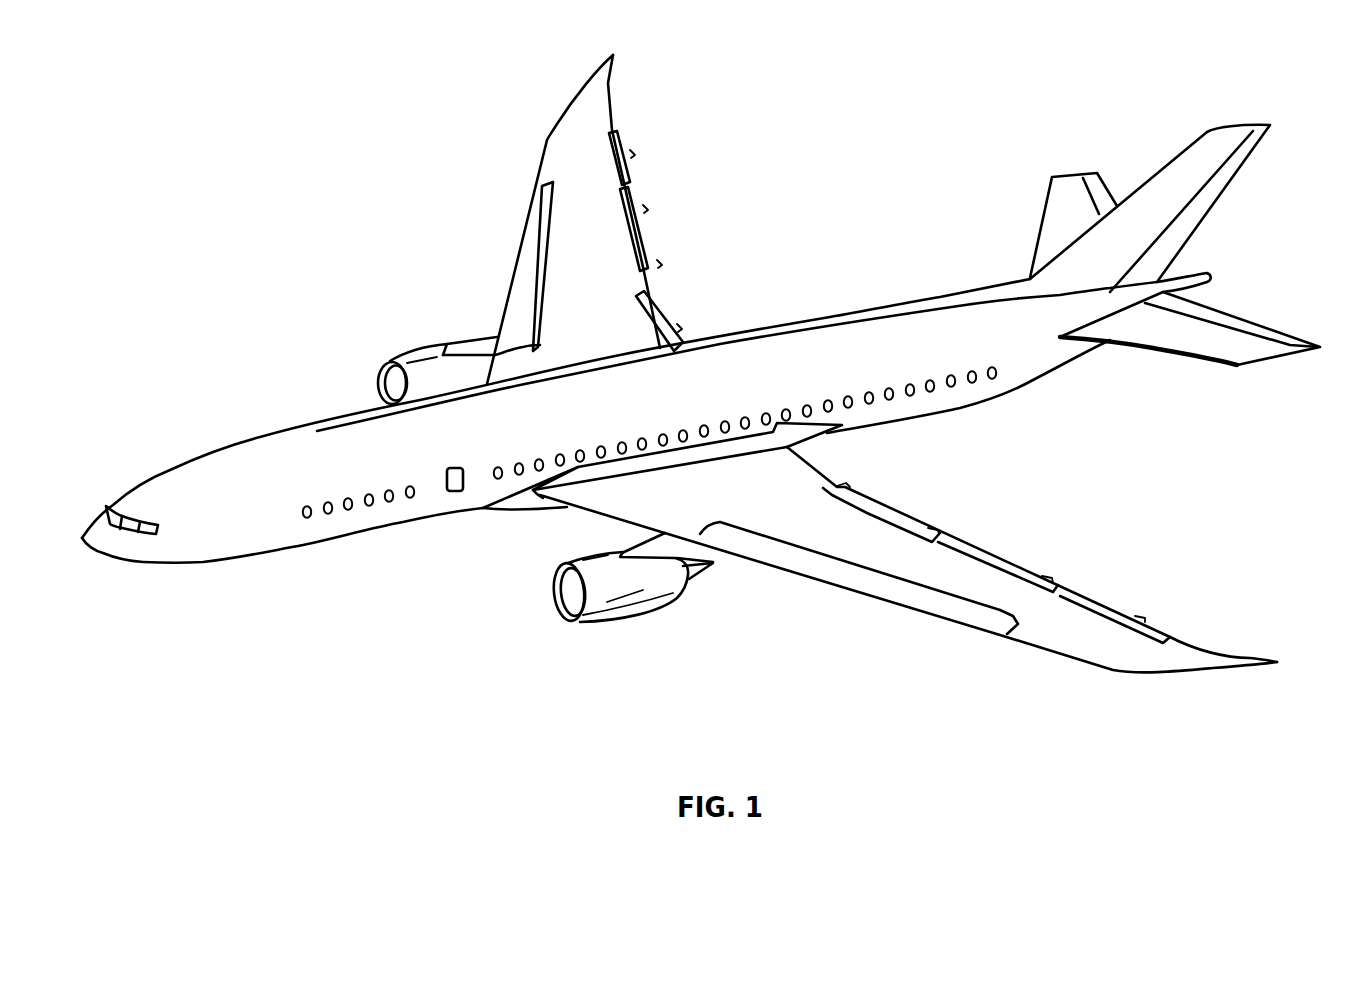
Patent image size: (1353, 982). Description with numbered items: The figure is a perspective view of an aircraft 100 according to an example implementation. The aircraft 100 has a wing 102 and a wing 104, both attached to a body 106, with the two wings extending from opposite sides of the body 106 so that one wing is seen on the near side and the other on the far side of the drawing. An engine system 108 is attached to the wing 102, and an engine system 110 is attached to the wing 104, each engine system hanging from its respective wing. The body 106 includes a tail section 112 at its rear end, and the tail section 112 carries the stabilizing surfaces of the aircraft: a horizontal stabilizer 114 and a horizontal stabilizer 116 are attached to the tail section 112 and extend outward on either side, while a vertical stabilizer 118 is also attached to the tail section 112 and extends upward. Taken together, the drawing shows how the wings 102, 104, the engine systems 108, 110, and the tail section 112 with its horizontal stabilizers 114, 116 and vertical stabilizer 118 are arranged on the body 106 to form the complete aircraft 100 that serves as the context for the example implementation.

The aircraft 100 is at (358, 256).
The wing 102 is at (612, 87).
The wing 104 is at (1133, 672).
The body 106 is at (250, 438).
The engine system 108 is at (410, 340).
The engine system 110 is at (641, 623).
The tail section 112 is at (1094, 405).
The horizontal stabilizer 114 is at (1040, 224).
The horizontal stabilizer 116 is at (1190, 358).
The vertical stabilizer 118 is at (1220, 198).